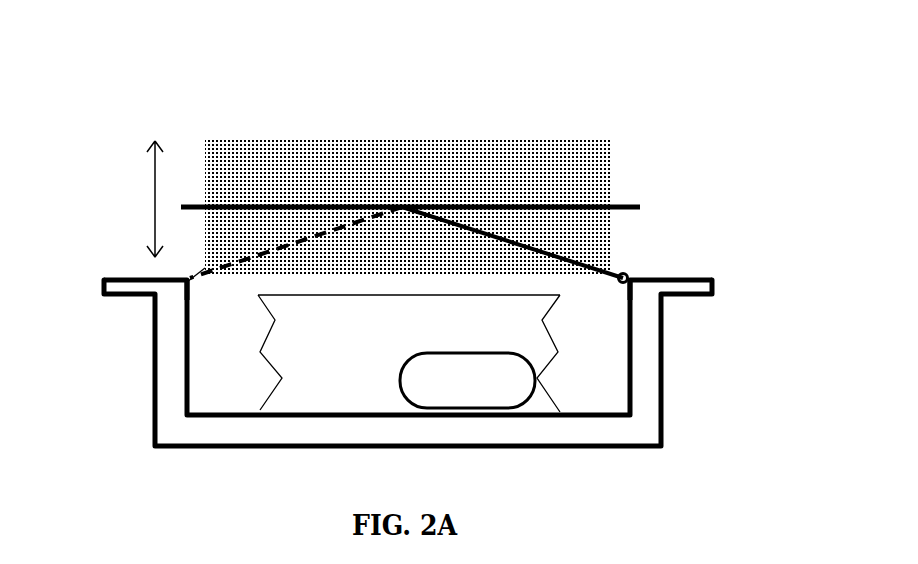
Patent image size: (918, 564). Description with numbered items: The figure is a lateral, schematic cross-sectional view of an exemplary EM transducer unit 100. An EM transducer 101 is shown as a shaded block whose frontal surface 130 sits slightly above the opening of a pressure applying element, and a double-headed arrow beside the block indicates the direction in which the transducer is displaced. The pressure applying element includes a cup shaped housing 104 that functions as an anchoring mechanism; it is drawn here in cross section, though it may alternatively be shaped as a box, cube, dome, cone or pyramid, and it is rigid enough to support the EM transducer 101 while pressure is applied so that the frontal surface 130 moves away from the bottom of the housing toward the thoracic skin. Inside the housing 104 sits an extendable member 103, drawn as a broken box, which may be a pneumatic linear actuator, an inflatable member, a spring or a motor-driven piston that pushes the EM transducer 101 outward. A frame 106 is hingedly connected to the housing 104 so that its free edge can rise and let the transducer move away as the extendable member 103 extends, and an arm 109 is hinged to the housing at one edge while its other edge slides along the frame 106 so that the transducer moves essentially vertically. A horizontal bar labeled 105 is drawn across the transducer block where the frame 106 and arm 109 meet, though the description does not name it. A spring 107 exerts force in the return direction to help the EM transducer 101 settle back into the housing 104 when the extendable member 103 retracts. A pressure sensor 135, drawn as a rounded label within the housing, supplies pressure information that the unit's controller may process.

The EM transducer unit 100 is at (592, 85).
The EM transducer 101 is at (303, 150).
The frontal surface 130 is at (393, 140).
The support bar 105 is at (645, 200).
The frame 106 is at (600, 263).
The spring 107 is at (642, 283).
The arm 109 is at (183, 283).
The cup shaped housing 104 is at (168, 417).
The extendable member 103 is at (409, 353).
The pressure sensor 135 is at (547, 387).